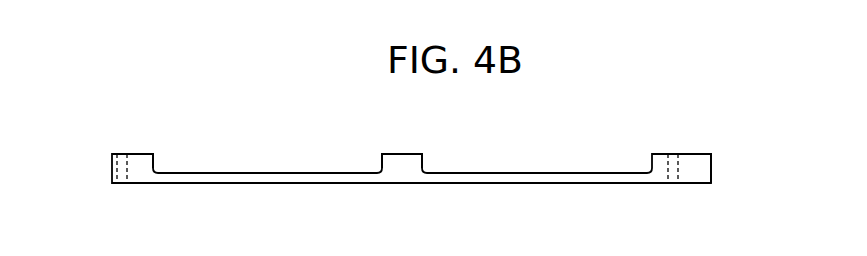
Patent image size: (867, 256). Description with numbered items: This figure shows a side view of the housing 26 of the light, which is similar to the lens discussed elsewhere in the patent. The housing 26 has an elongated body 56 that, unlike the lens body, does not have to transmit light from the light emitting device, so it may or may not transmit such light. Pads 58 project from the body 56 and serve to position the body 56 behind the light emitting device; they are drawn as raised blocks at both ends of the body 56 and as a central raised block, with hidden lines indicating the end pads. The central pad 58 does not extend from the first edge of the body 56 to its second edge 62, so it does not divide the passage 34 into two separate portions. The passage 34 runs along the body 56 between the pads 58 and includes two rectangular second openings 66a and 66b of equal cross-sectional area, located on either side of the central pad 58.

The housing 26 is at (130, 80).
The pads 58 is at (140, 154).
The second edge 62 is at (402, 168).
The second opening 66a is at (228, 152).
The second opening 66b is at (564, 152).
The passage 34 is at (292, 153).
The body 56 is at (523, 183).